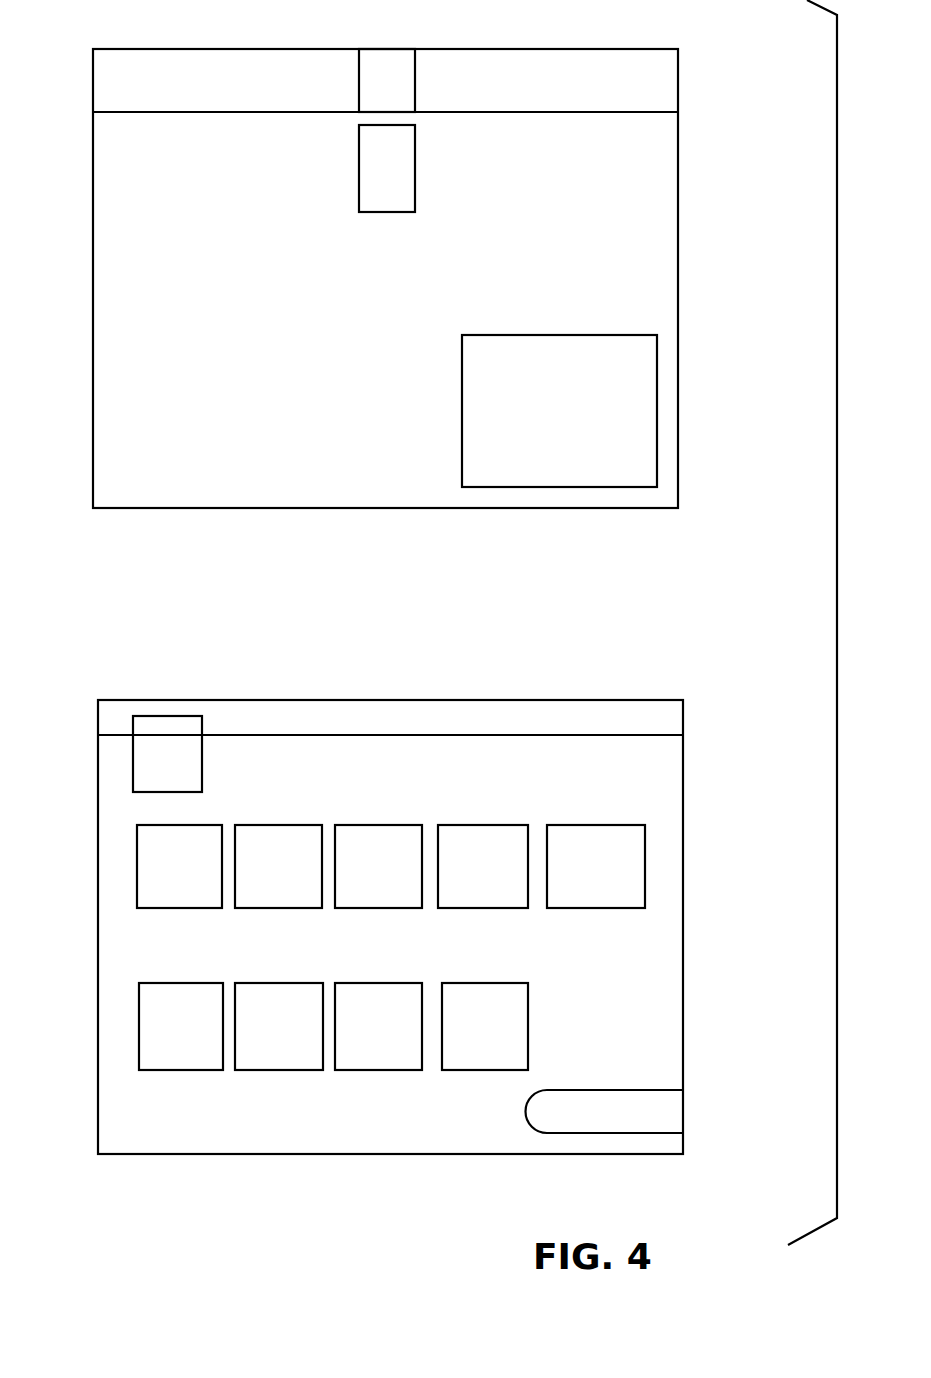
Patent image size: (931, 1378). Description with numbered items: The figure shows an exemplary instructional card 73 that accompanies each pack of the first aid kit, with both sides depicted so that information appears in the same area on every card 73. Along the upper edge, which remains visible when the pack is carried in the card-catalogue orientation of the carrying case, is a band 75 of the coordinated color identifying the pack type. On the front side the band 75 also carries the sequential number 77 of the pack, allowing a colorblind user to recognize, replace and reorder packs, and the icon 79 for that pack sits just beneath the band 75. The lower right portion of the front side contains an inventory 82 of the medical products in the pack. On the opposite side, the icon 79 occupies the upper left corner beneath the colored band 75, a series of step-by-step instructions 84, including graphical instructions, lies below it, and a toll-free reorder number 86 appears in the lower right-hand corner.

The instructional card 73 is at (697, 159).
The band of coordinated color 75 is at (118, 87).
The sequential number 77 is at (387, 65).
The icon 79 is at (383, 170).
The inventory 82 is at (640, 392).
The step-by-step instructions 84 is at (85, 1057).
The toll-free number 86 is at (675, 1110).